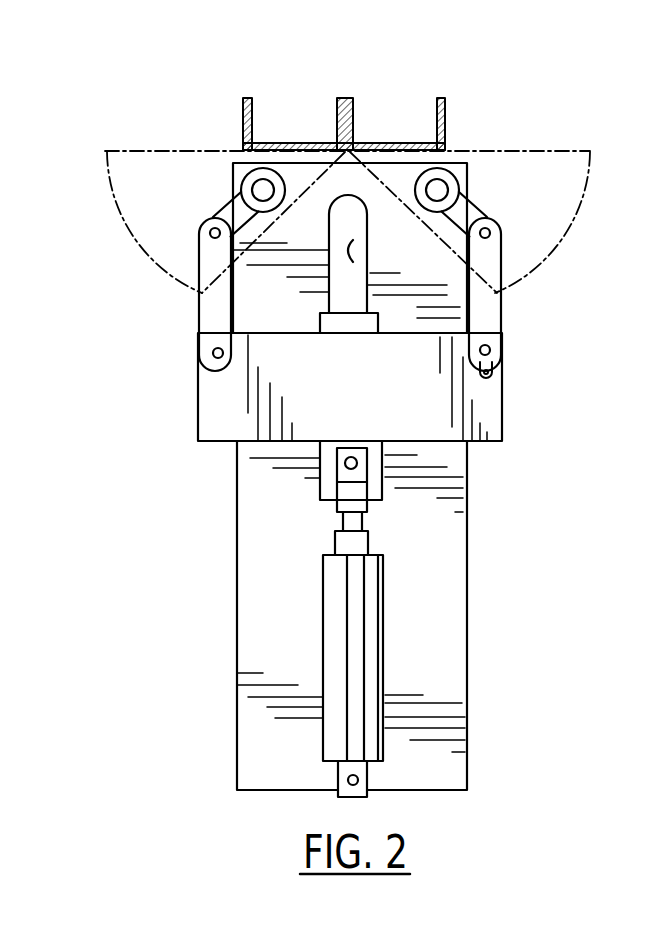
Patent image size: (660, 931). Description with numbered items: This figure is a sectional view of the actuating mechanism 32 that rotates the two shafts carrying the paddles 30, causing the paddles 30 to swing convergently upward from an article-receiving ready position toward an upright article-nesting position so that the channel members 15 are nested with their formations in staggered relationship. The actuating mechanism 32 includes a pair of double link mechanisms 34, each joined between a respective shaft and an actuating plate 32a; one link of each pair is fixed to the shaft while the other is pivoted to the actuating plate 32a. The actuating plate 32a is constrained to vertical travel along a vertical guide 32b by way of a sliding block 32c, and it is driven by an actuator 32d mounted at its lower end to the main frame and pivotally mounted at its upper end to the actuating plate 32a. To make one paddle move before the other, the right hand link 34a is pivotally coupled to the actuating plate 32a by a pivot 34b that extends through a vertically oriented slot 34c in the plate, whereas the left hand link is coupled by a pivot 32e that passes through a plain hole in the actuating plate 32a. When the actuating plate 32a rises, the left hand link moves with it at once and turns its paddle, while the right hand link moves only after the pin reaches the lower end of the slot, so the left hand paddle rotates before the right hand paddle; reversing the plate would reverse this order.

The channel members 15 is at (253, 122).
The paddles 30 is at (137, 150).
The actuating mechanism 32 is at (495, 573).
The actuating plate 32a is at (386, 420).
The vertical guide 32b is at (353, 240).
The sliding block 32c is at (382, 483).
The actuator 32d is at (333, 630).
The pivot 32e is at (232, 352).
The double link mechanisms 34 is at (188, 211).
The right hand link 34a is at (483, 315).
The pivot 34b is at (502, 358).
The vertically oriented slot 34c is at (487, 375).